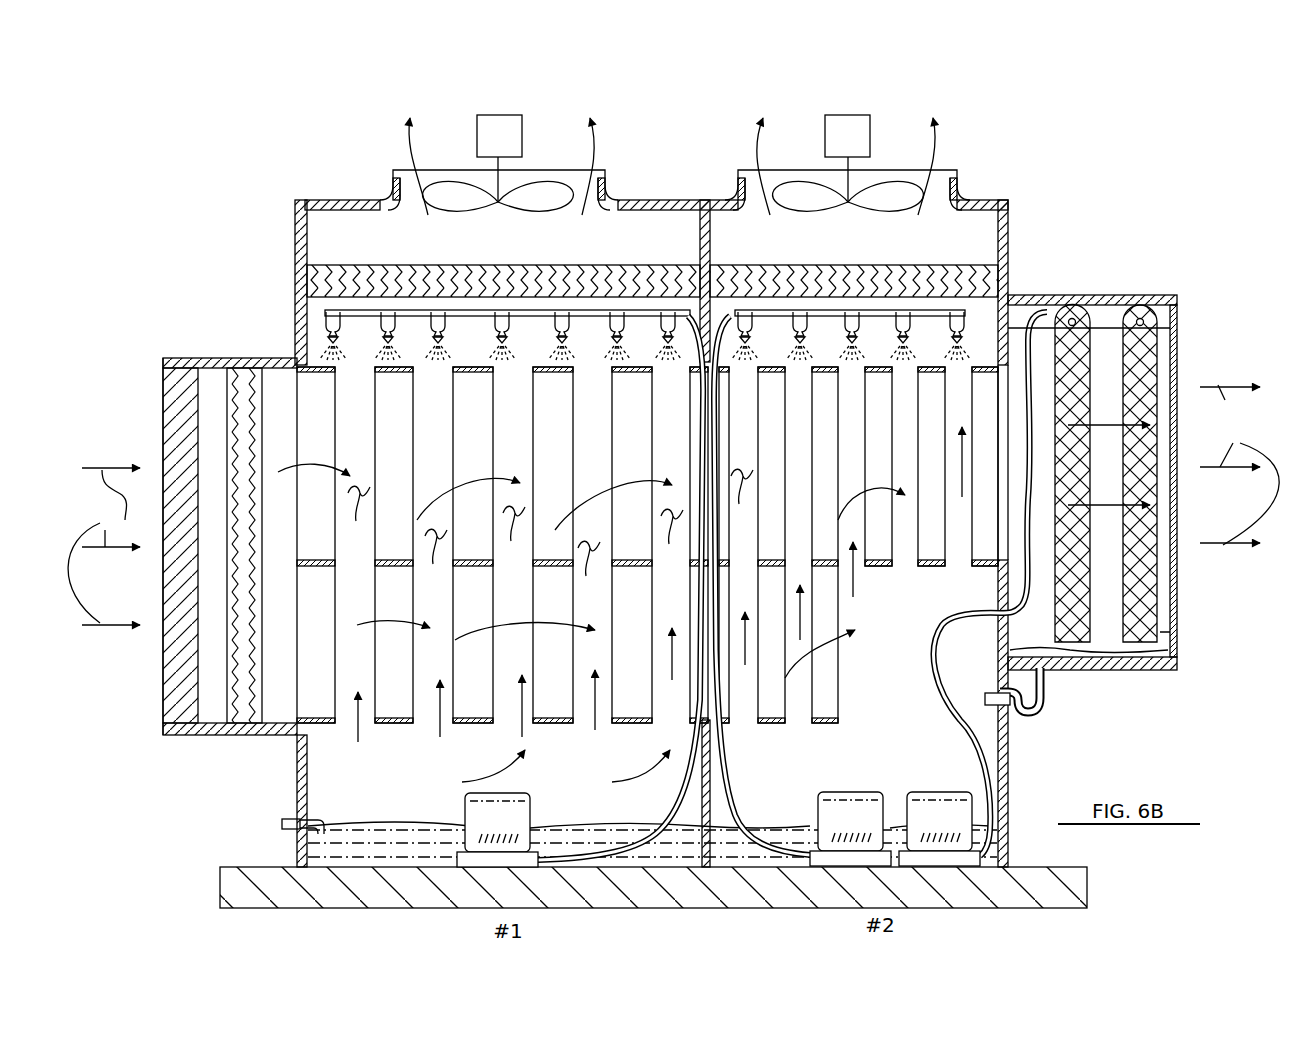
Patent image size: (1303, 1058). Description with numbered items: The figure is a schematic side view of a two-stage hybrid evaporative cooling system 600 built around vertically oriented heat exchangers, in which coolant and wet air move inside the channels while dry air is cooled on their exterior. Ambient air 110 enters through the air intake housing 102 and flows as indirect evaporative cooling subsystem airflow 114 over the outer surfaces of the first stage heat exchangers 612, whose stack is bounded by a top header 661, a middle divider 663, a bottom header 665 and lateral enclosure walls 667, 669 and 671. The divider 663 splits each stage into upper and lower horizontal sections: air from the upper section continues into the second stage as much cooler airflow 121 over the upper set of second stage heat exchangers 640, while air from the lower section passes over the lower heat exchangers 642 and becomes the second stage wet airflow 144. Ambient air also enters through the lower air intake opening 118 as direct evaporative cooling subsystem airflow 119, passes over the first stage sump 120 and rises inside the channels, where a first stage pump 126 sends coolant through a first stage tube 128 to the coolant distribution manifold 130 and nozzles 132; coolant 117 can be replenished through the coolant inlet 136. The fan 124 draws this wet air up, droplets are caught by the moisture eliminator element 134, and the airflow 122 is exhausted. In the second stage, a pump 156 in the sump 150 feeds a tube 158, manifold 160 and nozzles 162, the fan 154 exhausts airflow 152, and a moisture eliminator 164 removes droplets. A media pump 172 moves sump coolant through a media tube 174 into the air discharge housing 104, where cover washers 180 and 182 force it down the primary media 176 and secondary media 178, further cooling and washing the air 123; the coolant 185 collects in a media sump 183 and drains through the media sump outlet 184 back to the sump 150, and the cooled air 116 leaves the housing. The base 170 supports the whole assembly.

The multi-stage hybrid evaporative cooling system 600 is at (210, 255).
The air intake housing 102 is at (258, 337).
The air discharge housing 104 is at (1195, 338).
The ambient air 110 is at (262, 778).
The indirect evaporative cooling subsystem airflow 114 is at (378, 642).
The exhausted airflow 116 is at (1239, 465).
The coolant 117 is at (270, 824).
The lower air intake opening 118 is at (300, 778).
The direct evaporative cooling subsystem airflow 119 is at (524, 710).
The first stage sump 120 is at (368, 845).
The indirect evaporative cooling subsystem airflow 121 is at (877, 483).
The exhausted wet airflow 122 is at (489, 149).
The cooled airflow 123 is at (1107, 502).
The first stage direct evaporative cooling subsystem fan 124 is at (498, 115).
The first stage pump 126 is at (483, 829).
The first stage tube 128 is at (678, 806).
The first stage coolant distribution manifold 130 is at (376, 312).
The nozzles 132 is at (330, 320).
The first stage moisture eliminator element 134 is at (330, 283).
The coolant inlet 136 is at (322, 827).
The second stage direct evaporative cooling subsystem airflow 144 is at (834, 636).
The second stage sump 150 is at (742, 842).
The exhausted second stage airflow 152 is at (847, 149).
The second stage direct evaporative cooling subsystem fan 154 is at (848, 115).
The second stage pump 156 is at (835, 828).
The second stage tube 158 is at (743, 772).
The second stage coolant distribution manifold 160 is at (893, 310).
The nozzles 162 is at (1005, 228).
The moisture eliminator 164 is at (962, 312).
The base 170 is at (978, 890).
The media pump 172 is at (923, 828).
The media tube 174 is at (945, 618).
The primary media 176 is at (1080, 618).
The secondary media 178 is at (1147, 592).
The primary cover washer 180 is at (1073, 316).
The secondary cover washer 182 is at (1141, 316).
The media sump 183 is at (1078, 652).
The media sump outlet 184 is at (1027, 713).
The coolant 185 is at (985, 700).
The first stage heat exchangers 612 is at (502, 545).
The upper set of second stage heat exchangers 640 is at (915, 588).
The lower set of second stage heat exchangers 642 is at (800, 700).
The top header 661 is at (390, 366).
The middle divider 663 is at (330, 560).
The bottom header 665 is at (822, 718).
The lateral enclosure wall 667 is at (297, 232).
The lateral enclosure wall 669 is at (702, 230).
The lateral enclosure wall 671 is at (1008, 252).